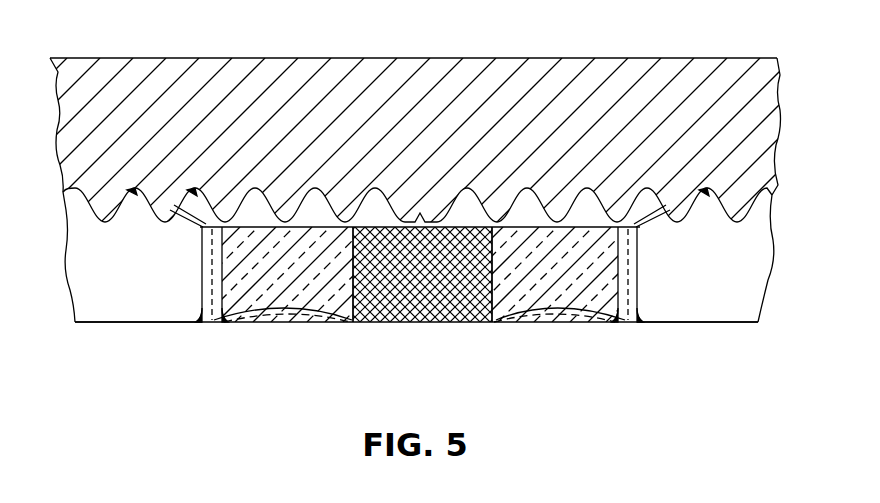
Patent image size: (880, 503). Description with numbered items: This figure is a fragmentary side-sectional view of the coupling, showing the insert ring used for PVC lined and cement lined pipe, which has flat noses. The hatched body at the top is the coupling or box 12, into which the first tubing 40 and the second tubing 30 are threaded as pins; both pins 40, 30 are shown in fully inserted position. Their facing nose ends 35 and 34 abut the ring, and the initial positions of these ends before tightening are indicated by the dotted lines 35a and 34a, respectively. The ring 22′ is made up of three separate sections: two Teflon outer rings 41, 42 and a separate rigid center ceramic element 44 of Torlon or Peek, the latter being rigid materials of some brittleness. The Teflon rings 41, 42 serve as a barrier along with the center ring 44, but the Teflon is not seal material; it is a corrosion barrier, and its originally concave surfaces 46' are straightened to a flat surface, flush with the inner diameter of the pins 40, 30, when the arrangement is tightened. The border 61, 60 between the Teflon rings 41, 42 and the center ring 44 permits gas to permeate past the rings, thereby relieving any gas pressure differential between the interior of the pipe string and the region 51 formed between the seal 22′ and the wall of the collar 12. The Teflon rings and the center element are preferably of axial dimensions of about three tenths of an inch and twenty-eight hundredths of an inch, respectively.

The coupling or box 12 is at (403, 72).
The region 51 is at (254, 193).
The Teflon outer ring 41 is at (352, 210).
The center rigid ceramic element 44 is at (452, 208).
The Teflon outer ring 42 is at (550, 213).
The nose end of first tubing 35 is at (200, 238).
The dotted line 35a is at (222, 325).
The nose end of second tubing 34 is at (640, 237).
The dotted line 34a is at (632, 325).
The concave surface 46' is at (414, 301).
The ring 22′ is at (411, 324).
The border 61 is at (352, 324).
The border 60 is at (492, 324).
The first tubing 40 is at (113, 323).
The second tubing 30 is at (706, 323).